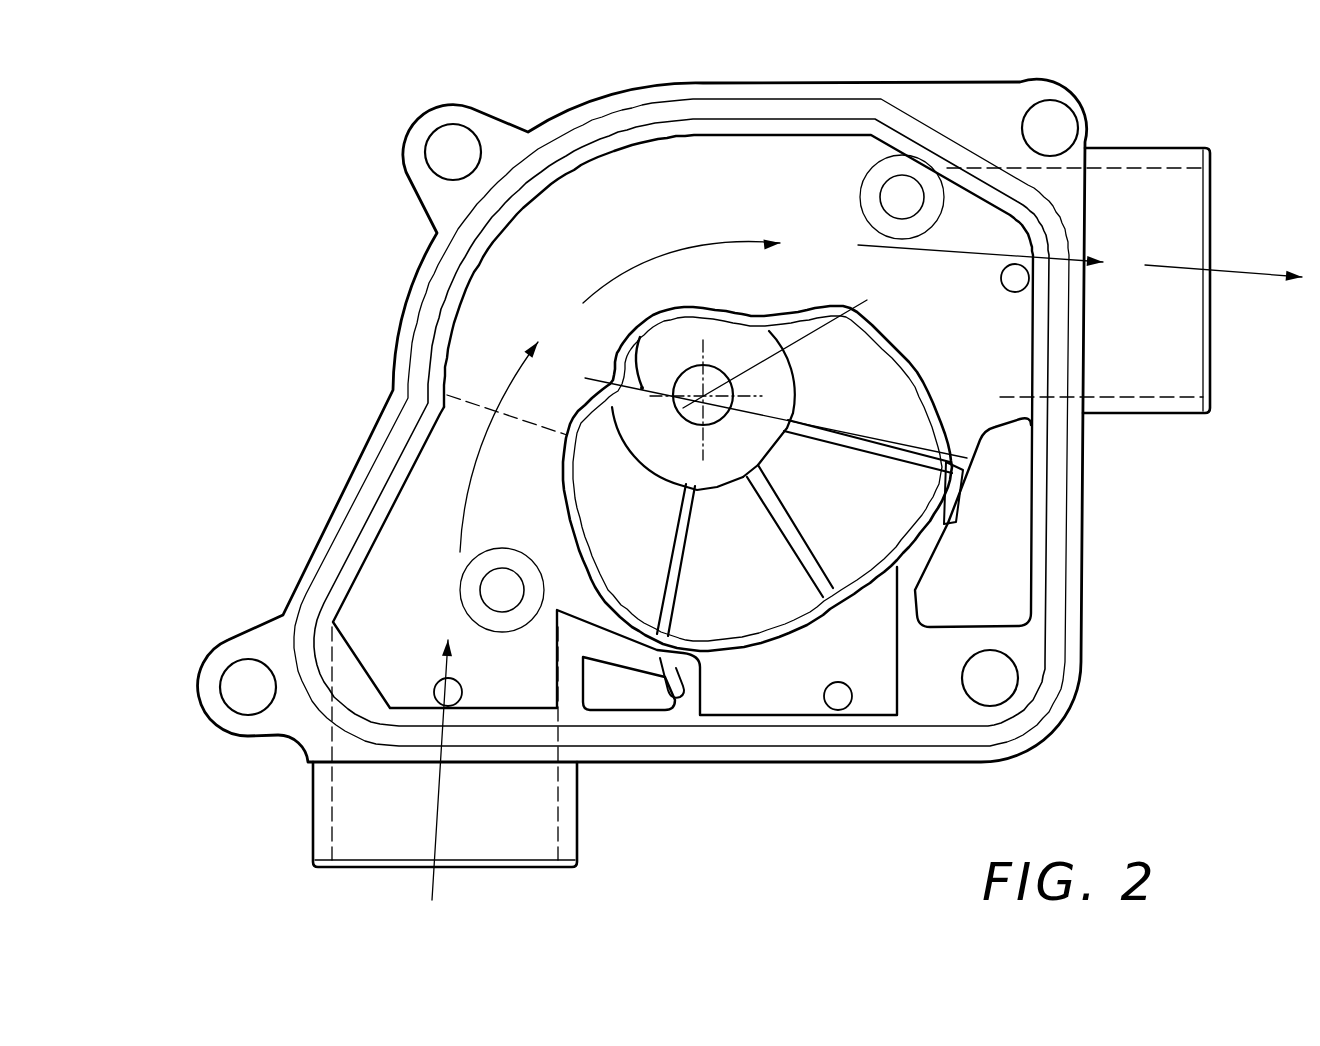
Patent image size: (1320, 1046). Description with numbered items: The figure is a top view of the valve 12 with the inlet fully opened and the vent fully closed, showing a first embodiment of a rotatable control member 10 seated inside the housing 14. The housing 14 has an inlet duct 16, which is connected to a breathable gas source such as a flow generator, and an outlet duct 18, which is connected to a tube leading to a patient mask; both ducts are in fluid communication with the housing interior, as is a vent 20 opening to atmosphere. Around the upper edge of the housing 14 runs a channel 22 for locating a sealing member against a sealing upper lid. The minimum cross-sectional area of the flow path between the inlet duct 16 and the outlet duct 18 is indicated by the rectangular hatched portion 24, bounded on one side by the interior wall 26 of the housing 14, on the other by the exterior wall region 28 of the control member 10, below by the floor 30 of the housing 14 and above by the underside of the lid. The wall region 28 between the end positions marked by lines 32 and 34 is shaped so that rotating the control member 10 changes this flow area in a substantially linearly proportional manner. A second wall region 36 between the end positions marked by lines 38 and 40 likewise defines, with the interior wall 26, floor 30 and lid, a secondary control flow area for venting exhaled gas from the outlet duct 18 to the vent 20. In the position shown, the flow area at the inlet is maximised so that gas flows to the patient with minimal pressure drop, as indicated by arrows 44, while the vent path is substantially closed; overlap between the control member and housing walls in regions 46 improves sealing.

The control member 10 is at (788, 306).
The valve 12 is at (1090, 116).
The housing 14 is at (417, 289).
The inlet duct 16 is at (512, 853).
The outlet duct 18 is at (1198, 375).
The vent 20 is at (895, 748).
The channel 22 is at (368, 490).
The hatched portion 24 is at (485, 408).
The interior wall 26 is at (477, 273).
The exterior wall region 28 is at (570, 518).
The floor 30 is at (506, 353).
The line 32 is at (676, 543).
The line 34 is at (640, 340).
The wall region 36 is at (918, 372).
The line 38 is at (800, 337).
The line 40 is at (878, 447).
The arrows 44 is at (670, 262).
The regions 46 is at (947, 523).